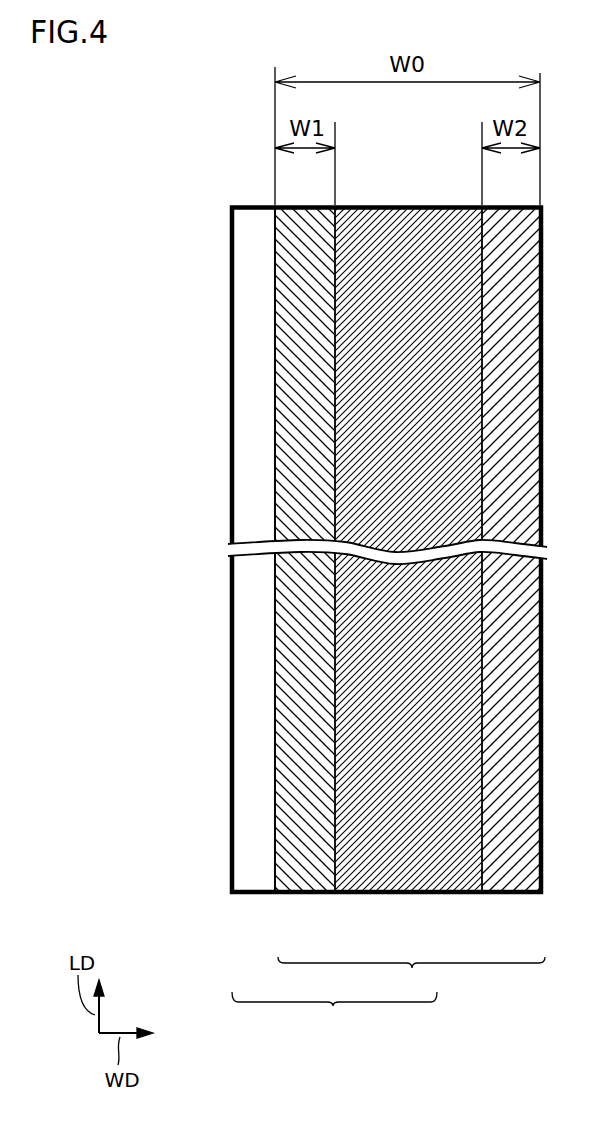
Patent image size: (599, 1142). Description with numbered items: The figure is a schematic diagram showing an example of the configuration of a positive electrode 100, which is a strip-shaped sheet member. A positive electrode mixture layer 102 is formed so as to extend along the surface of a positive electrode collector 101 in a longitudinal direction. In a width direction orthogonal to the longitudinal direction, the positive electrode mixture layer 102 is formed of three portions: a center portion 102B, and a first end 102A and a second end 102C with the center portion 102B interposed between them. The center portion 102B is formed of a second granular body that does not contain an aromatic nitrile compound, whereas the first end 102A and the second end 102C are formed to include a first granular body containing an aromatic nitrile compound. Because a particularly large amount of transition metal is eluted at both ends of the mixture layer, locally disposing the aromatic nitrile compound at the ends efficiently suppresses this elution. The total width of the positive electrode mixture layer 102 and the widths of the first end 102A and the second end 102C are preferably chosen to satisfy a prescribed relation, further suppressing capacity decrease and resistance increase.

The positive electrode 100 is at (386, 622).
The positive electrode collector 101 is at (253, 883).
The positive electrode mixture layer 102 is at (410, 601).
The first end 102A is at (302, 883).
The center portion 102B is at (408, 883).
The second end 102C is at (512, 883).